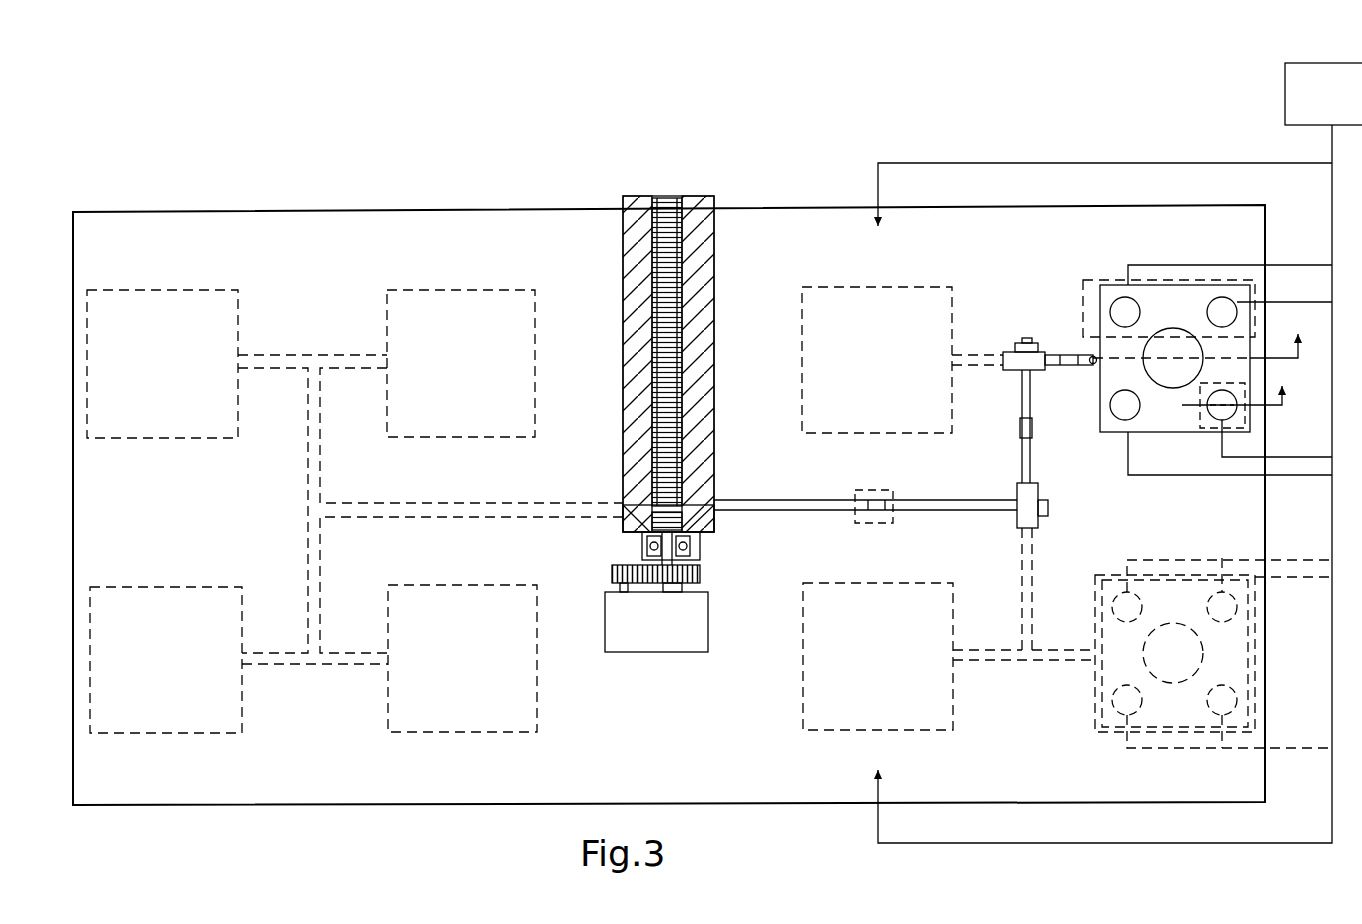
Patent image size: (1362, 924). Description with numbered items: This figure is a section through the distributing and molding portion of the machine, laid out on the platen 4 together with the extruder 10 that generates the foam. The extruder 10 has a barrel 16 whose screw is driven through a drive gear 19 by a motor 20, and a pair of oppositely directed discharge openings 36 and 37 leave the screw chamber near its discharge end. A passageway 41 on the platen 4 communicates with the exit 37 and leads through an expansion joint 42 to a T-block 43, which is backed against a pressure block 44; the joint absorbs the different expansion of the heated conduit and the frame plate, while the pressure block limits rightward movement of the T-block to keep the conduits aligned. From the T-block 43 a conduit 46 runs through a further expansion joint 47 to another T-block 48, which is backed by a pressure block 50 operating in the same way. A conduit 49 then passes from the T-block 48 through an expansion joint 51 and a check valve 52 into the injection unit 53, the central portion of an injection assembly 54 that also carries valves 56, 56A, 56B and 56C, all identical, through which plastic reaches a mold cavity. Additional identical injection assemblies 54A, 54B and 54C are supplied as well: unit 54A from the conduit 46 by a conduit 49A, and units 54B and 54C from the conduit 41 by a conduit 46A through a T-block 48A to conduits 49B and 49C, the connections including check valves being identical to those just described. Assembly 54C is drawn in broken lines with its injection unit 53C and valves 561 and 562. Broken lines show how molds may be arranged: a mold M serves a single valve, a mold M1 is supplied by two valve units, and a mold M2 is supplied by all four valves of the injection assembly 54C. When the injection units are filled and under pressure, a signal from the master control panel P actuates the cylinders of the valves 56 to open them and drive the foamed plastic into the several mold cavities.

The platen 4 is at (1258, 514).
The extruder 10 is at (728, 236).
The barrel 16 is at (712, 308).
The drive gear 19 is at (700, 576).
The motor 20 is at (680, 640).
The discharge opening 36 is at (636, 506).
The discharge opening 37 is at (705, 506).
The passageway 41 is at (768, 499).
The expansion joint 42 is at (870, 512).
The T-block 43 is at (1032, 525).
The pressure block 44 is at (1048, 508).
The conduit 46 is at (1022, 470).
The conduit 46A is at (1032, 568).
The expansion joint 47 is at (1022, 432).
The T-block 48 is at (1010, 358).
The T-block 48A is at (1027, 656).
The conduit 49 is at (1056, 366).
The conduit 49A is at (983, 370).
The conduit 49B is at (986, 648).
The conduit 49C is at (1040, 664).
The pressure block 50 is at (1027, 340).
The expansion joint 51 is at (1070, 354).
The check valve 52 is at (1090, 366).
The injection unit 53 is at (1180, 390).
The motor shaft 53C is at (1204, 655).
The injection assembly 54 is at (1160, 282).
The injection assembly 54A is at (870, 286).
The injection assembly 54B is at (912, 582).
The injection assembly 54C is at (1197, 580).
The valve unit 56 is at (1222, 420).
The valve unit 56A is at (1215, 302).
The valve unit 56B is at (1122, 305).
The valve unit 56C is at (1125, 413).
The mounting bolt 561 is at (1237, 693).
The mounting bolt 562 is at (1115, 712).
The mold M1 is at (1245, 282).
The mold M2 is at (1230, 565).
The mold M is at (1245, 420).
The master control panel P is at (1120, 453).